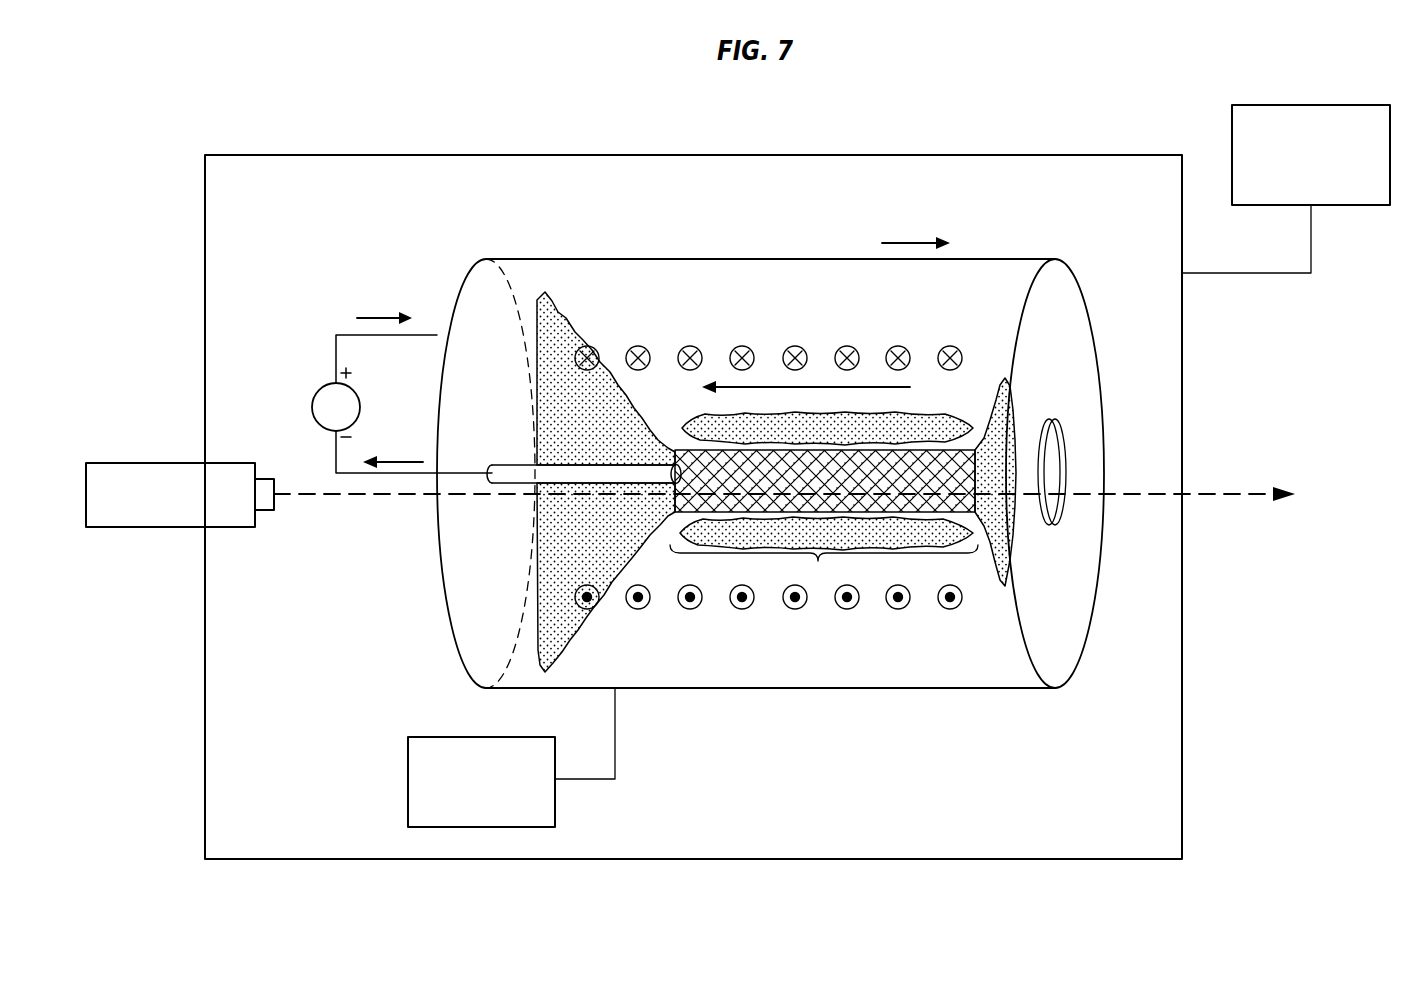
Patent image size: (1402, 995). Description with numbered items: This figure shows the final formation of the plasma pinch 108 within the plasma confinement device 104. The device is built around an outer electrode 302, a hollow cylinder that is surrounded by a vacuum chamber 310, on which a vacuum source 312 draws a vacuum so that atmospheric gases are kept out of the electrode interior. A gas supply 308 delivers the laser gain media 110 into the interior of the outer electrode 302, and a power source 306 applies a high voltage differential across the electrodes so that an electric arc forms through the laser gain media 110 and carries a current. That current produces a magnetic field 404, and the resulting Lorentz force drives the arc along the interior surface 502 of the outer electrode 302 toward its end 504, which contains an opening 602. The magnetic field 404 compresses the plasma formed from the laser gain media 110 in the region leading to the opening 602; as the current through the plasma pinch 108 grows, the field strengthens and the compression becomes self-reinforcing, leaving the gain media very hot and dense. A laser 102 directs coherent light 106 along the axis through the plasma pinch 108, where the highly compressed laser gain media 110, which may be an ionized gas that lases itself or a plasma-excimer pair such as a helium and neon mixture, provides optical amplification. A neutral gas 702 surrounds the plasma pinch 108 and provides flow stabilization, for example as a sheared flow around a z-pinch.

The laser 102 is at (117, 430).
The plasma confinement device 104 is at (693, 451).
The coherent light 106 is at (1230, 490).
The plasma pinch 108 is at (824, 517).
The laser gain media 110 is at (567, 335).
The outer electrode 302 is at (793, 444).
The power source 306 is at (313, 392).
The gas supply 308 is at (497, 810).
The vacuum chamber 310 is at (693, 507).
The vacuum source 312 is at (1328, 192).
The magnetic field 404 is at (742, 345).
The interior surface 502 is at (534, 272).
The end 504 is at (1077, 336).
The opening 602 is at (1056, 458).
The neutral gas 702 is at (938, 418).